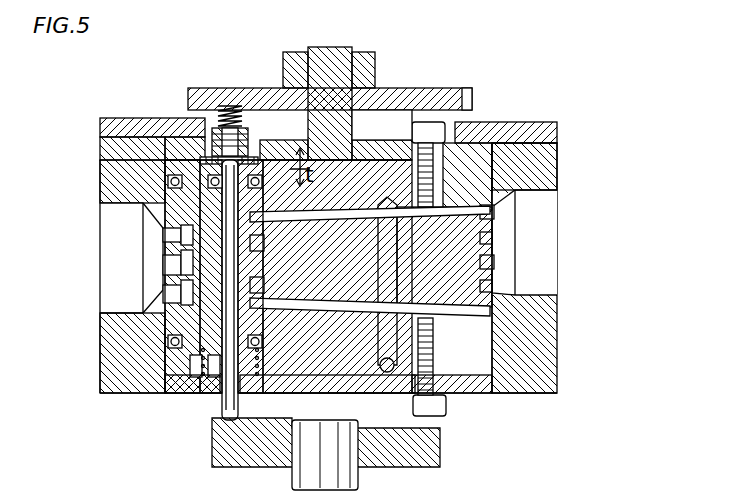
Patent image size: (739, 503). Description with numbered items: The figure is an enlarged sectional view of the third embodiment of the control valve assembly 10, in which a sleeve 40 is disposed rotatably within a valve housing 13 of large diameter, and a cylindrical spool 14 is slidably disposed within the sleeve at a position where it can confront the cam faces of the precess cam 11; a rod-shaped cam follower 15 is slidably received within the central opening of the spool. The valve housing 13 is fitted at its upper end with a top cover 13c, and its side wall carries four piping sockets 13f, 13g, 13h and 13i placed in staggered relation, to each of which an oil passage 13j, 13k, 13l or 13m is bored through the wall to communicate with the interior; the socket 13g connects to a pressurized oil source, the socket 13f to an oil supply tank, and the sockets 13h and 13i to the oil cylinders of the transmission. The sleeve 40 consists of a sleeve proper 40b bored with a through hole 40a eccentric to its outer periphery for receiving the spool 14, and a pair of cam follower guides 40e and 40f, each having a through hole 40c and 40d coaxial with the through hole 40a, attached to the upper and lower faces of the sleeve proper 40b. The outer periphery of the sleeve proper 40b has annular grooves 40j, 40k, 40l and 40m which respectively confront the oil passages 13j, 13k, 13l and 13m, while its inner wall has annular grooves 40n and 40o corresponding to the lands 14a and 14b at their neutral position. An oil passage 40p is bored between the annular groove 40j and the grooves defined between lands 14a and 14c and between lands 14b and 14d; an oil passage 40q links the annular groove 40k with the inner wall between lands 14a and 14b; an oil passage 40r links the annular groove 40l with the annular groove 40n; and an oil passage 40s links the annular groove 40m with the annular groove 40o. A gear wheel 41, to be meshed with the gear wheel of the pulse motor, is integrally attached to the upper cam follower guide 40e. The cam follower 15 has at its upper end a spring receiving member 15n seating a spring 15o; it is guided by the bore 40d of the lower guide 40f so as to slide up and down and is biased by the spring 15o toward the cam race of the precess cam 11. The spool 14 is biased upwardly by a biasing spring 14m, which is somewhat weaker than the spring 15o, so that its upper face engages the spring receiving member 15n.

The valve assembly 10 is at (97, 110).
The precess cam 11 is at (440, 456).
The valve housing 13 is at (557, 152).
The top cover 13c is at (540, 122).
The piping socket 13f is at (548, 216).
The piping socket 13g is at (548, 280).
The piping socket 13h is at (115, 233).
The piping socket 13i is at (107, 296).
The oil passage 13j is at (502, 214).
The oil passage 13k is at (503, 262).
The oil passage 13l is at (160, 236).
The oil passage 13m is at (165, 300).
The cylindrical spool 14 is at (268, 340).
The land 14a is at (200, 250).
The land 14b is at (176, 352).
The land 14c is at (100, 165).
The land 14d is at (145, 394).
The biasing spring 14m is at (178, 394).
The cam follower 15 is at (225, 420).
The spring receiving member 15n is at (196, 128).
The spring 15o is at (220, 114).
The sleeve 40 is at (483, 358).
The through hole 40a is at (162, 203).
The sleeve proper 40b is at (465, 132).
The through hole 40c is at (250, 138).
The through hole 40d is at (232, 418).
The cam follower guide 40e is at (100, 148).
The cam follower guide 40f is at (470, 394).
The annular groove 40j is at (505, 240).
The annular groove 40k is at (500, 296).
The annular groove 40l is at (160, 206).
The annular groove 40m is at (170, 316).
The annular groove 40n is at (272, 246).
The annular groove 40o is at (258, 300).
The oil passage 40p is at (380, 197).
The oil passage 40q is at (163, 272).
The oil passage 40r is at (262, 216).
The oil passage 40s is at (172, 338).
The gear wheel 41 is at (465, 88).